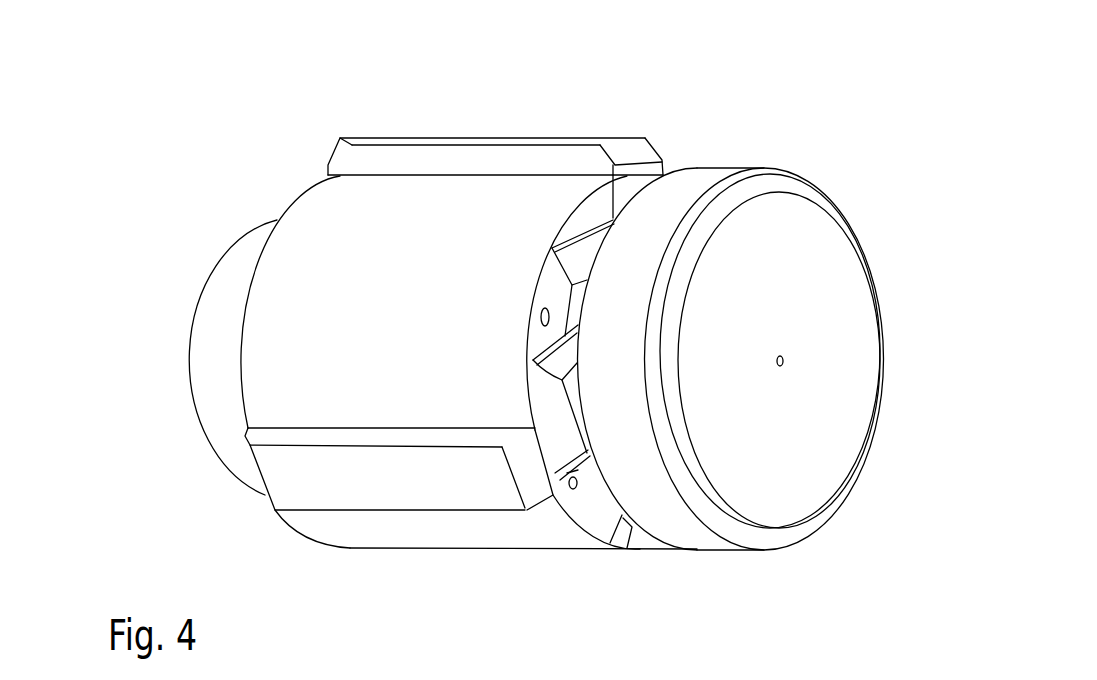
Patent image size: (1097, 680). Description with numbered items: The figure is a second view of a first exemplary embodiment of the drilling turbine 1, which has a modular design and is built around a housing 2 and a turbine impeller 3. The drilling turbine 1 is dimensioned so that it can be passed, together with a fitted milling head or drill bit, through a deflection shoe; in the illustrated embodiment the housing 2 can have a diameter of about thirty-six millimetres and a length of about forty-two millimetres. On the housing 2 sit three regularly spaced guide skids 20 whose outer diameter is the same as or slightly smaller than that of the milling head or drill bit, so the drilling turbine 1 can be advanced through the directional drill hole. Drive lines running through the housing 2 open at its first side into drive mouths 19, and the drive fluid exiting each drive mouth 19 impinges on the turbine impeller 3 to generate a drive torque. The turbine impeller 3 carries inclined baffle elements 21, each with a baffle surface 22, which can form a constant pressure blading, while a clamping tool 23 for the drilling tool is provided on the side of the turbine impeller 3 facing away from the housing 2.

The drilling turbine 1 is at (705, 105).
The housing 2 is at (268, 292).
The turbine impeller 3 is at (845, 379).
The drive mouth 19 is at (547, 310).
The guide skid 20 is at (355, 483).
The baffle element 21 is at (625, 533).
The baffle surface 22 is at (623, 518).
The clamping tool 23 is at (843, 220).